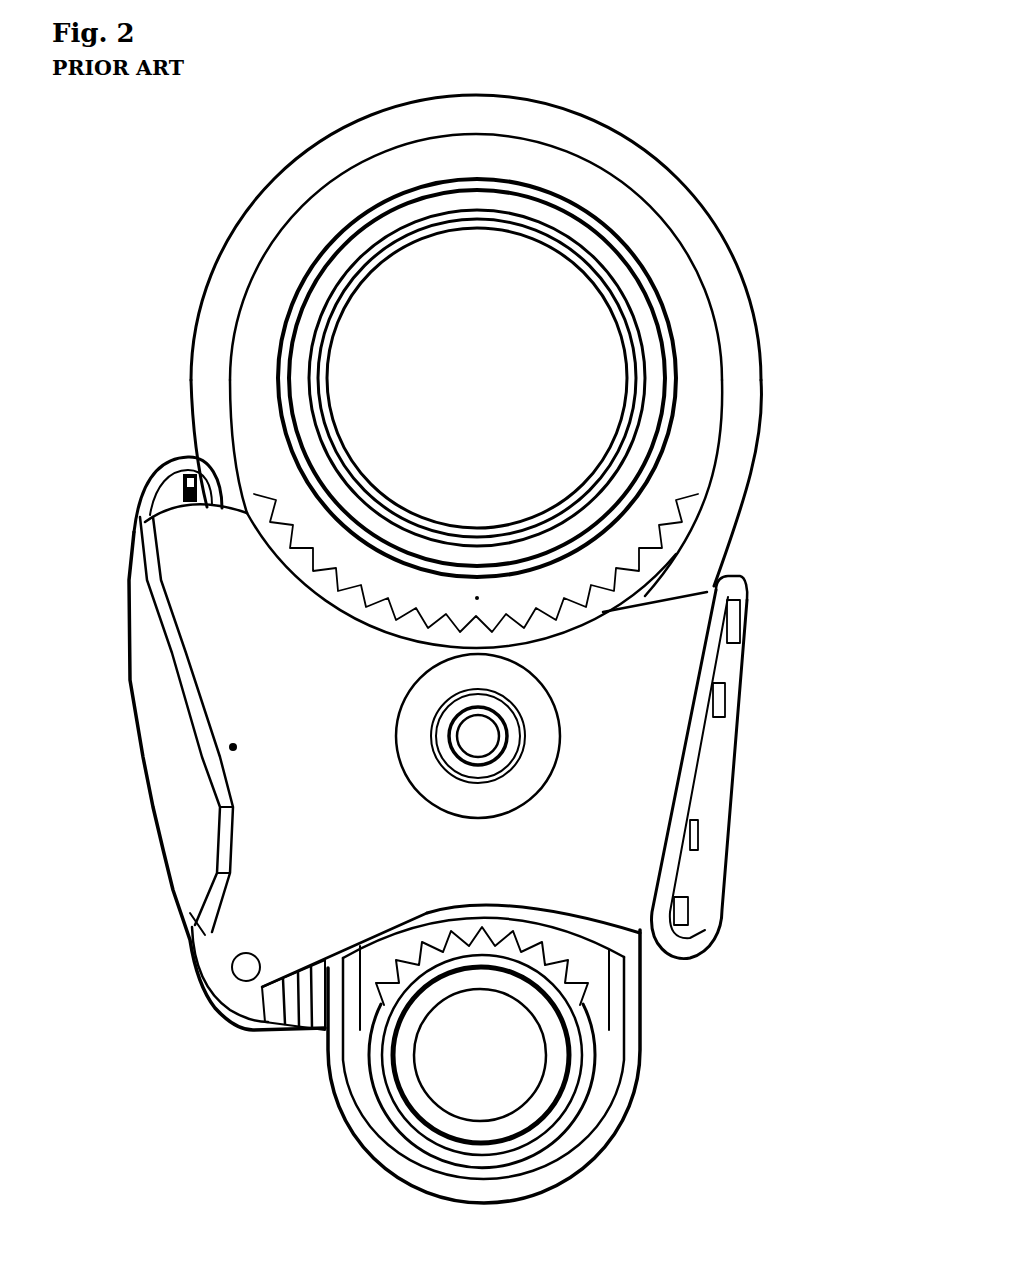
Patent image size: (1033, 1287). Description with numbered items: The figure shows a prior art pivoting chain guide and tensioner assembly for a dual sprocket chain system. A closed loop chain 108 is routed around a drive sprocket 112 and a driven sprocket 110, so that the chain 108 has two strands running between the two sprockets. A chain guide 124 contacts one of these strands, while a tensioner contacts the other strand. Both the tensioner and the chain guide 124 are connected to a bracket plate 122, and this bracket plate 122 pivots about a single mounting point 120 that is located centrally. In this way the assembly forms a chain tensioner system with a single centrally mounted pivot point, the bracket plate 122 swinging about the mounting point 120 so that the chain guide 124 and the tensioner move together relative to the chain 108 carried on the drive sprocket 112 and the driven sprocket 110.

The closed loop chain 108 is at (610, 142).
The driven sprocket 110 is at (553, 290).
The drive sprocket 112 is at (453, 1087).
The single mounting point 120 is at (487, 747).
The bracket plate 122 is at (426, 767).
The chain guide 124 is at (175, 782).